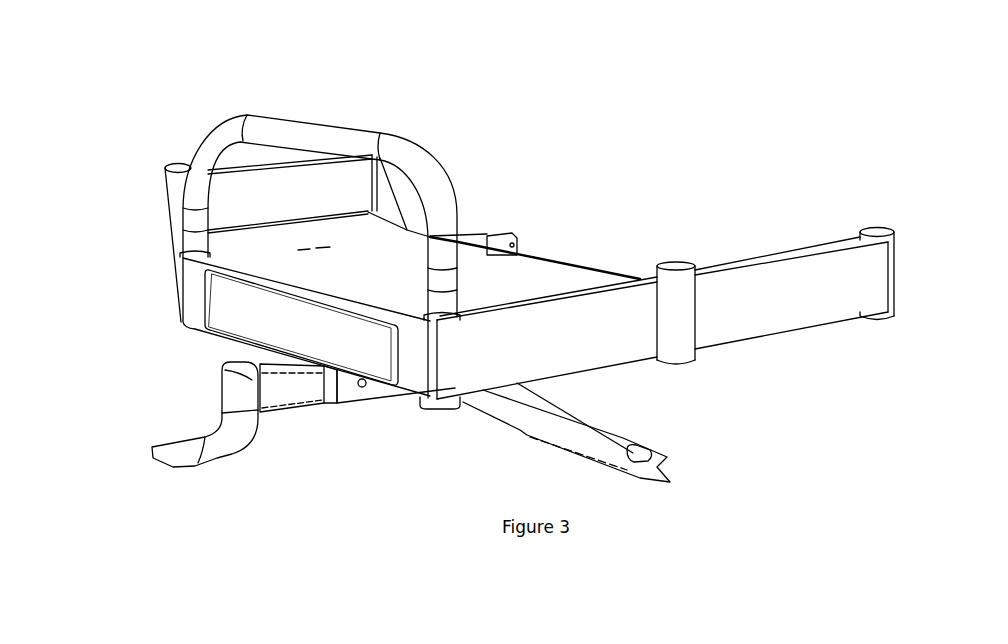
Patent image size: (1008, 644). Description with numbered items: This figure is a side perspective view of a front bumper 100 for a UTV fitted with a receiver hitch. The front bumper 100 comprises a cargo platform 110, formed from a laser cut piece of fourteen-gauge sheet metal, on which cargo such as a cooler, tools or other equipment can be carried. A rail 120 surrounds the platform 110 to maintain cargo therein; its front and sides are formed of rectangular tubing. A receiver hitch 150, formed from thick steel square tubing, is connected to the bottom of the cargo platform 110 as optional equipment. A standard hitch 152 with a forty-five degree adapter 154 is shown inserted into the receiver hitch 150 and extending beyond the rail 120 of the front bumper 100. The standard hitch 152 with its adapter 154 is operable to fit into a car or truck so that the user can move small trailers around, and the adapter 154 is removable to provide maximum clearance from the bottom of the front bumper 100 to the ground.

The front bumper 100 is at (678, 167).
The cargo platform 110 is at (495, 272).
The rail 120 is at (195, 295).
The receiver hitch 150 is at (350, 392).
The standard hitch 152 is at (275, 397).
The 45-degree adapter 154 is at (205, 462).